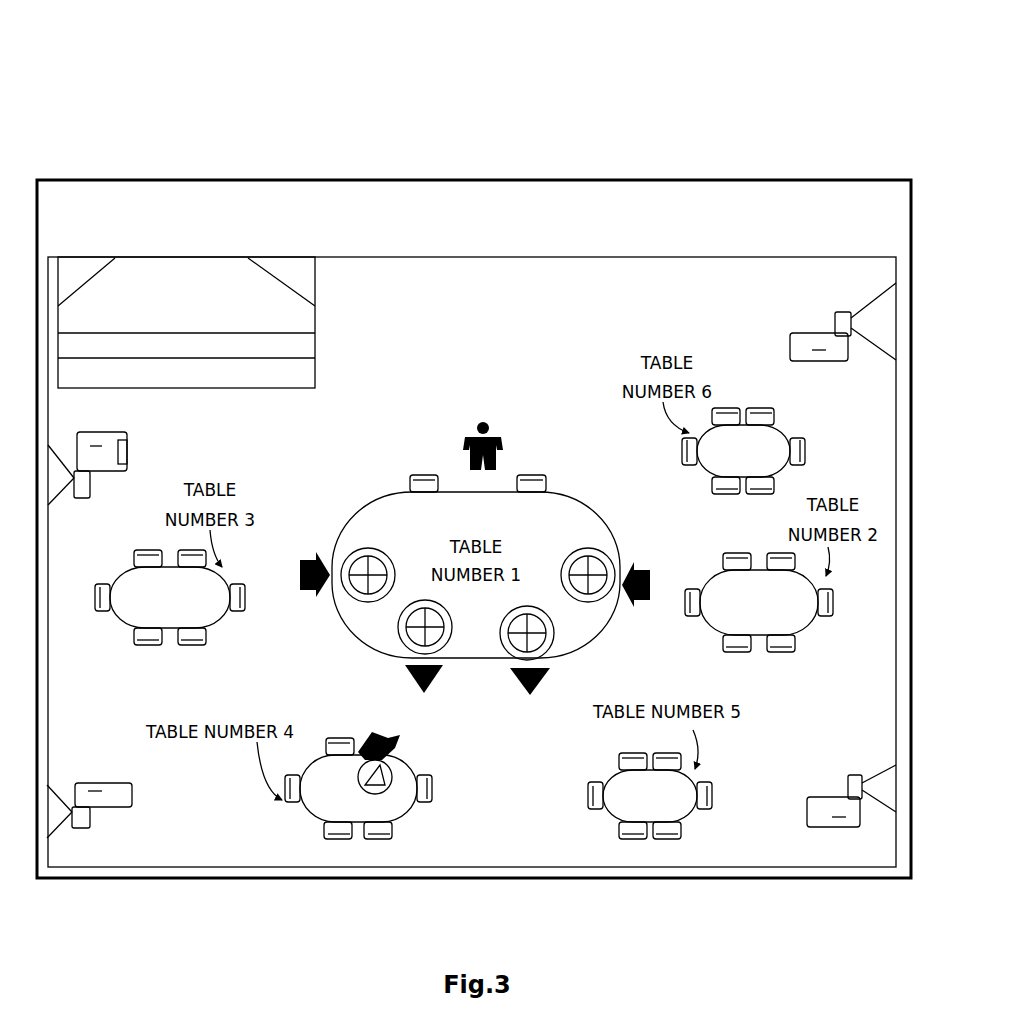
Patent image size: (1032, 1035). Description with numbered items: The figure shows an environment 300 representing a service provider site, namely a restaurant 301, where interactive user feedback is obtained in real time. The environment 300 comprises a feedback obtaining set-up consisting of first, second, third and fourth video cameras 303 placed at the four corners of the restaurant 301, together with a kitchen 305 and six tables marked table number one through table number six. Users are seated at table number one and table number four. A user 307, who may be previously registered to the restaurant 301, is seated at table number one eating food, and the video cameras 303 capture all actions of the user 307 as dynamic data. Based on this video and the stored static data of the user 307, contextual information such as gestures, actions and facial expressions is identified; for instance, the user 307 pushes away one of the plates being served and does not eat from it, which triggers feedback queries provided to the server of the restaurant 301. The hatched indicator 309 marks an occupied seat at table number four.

The environment 300 is at (831, 86).
The restaurant 301 is at (472, 532).
The video camera 303 is at (120, 431).
The kitchen 305 is at (186, 322).
The user 307 is at (305, 554).
The occupied seat / customer indicator 309 is at (404, 740).